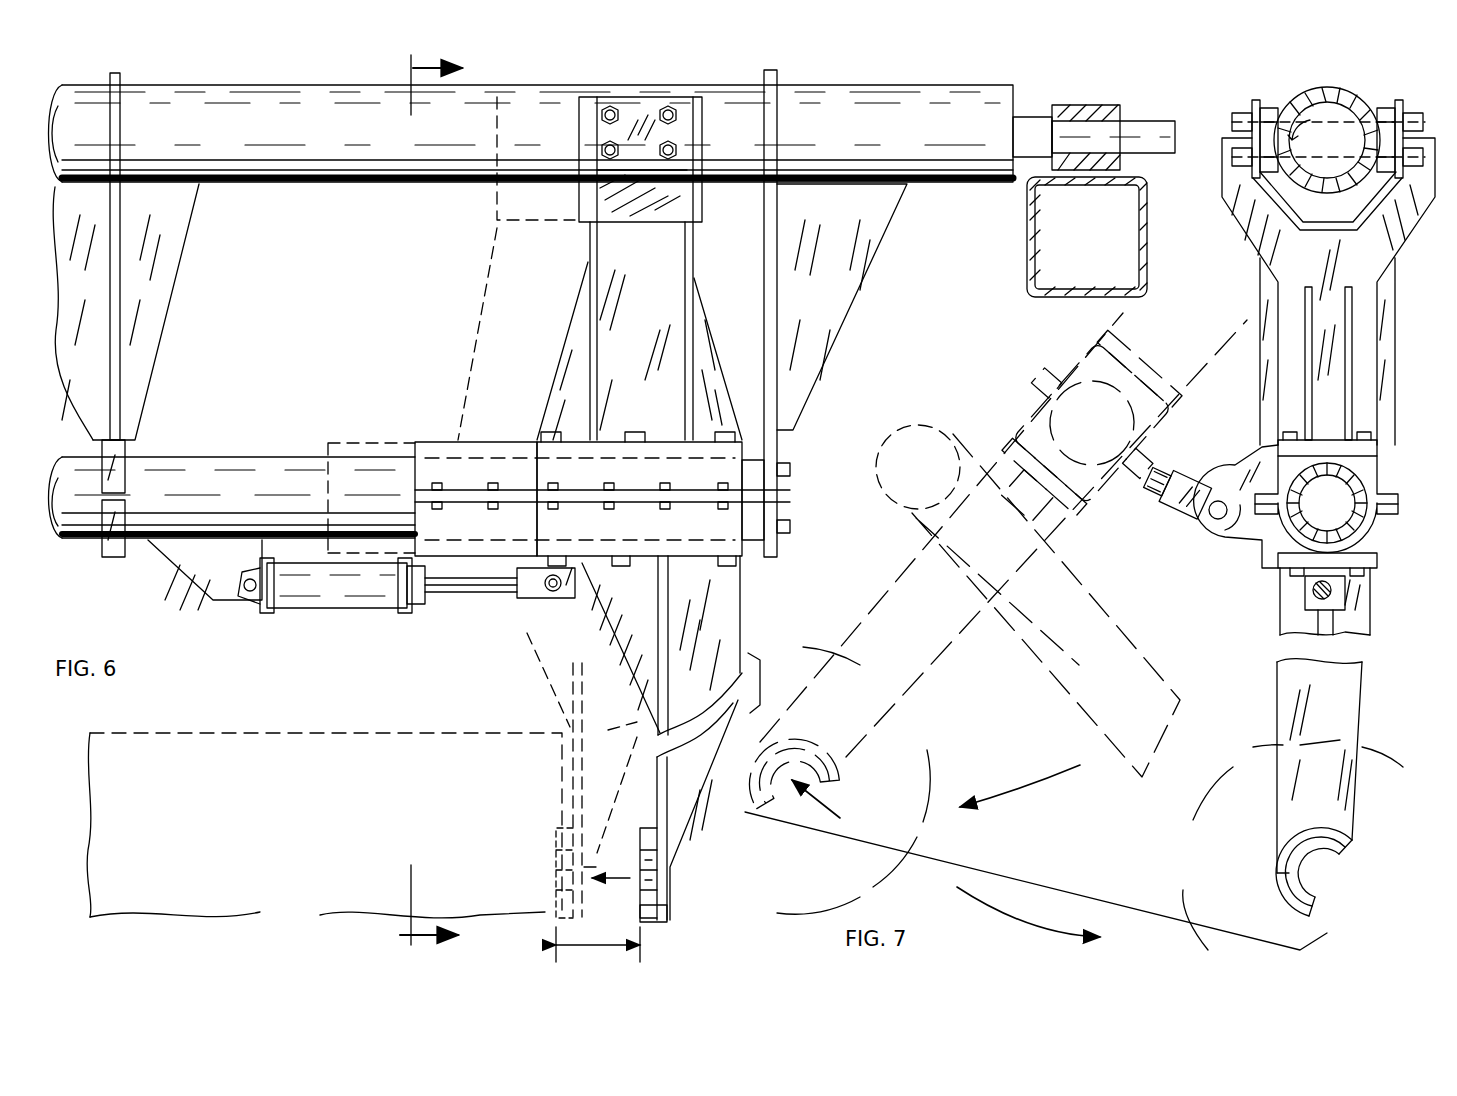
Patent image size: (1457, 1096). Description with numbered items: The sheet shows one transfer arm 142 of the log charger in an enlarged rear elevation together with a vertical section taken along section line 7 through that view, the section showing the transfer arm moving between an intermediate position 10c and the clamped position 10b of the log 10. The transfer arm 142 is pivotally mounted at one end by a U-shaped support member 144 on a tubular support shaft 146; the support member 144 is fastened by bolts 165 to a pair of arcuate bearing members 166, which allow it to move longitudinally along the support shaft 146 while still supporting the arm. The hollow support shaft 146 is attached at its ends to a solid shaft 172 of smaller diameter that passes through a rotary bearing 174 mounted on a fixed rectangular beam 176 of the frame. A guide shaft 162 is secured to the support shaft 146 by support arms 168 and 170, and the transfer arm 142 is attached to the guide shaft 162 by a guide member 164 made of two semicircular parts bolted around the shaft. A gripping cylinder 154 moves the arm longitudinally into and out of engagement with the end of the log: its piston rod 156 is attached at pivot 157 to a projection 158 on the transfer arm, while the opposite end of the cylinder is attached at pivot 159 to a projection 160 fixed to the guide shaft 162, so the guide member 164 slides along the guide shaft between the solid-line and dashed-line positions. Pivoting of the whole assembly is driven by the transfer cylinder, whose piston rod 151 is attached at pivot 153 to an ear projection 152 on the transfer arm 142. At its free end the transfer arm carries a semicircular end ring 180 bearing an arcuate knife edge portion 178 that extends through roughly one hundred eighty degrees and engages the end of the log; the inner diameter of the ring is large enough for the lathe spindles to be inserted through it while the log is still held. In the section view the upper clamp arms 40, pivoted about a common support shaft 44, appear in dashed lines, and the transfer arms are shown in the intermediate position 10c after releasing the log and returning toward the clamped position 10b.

In FIG. 6, the section line 7— 7 is at (427, 505).
In FIG. 6, the log 10 is at (430, 730).
In FIG. 7, the rough centered position 10b is at (920, 700).
In FIG. 7, the intermediate position 10c is at (1165, 872).
In FIG. 7, the upper clamp arms 40 is at (1100, 705).
In FIG. 7, the common support shaft 44 is at (878, 487).
In FIG. 6, the transfer arm 142 is at (735, 600).
In FIG. 7, the transfer arm 142 is at (1360, 725).
In FIG. 6, the U-shaped support member 144 is at (512, 72).
In FIG. 7, the U-shaped support member 144 is at (1390, 235).
In FIG. 6, the tubular support shaft 146 is at (492, 100).
In FIG. 7, the tubular support shaft 146 is at (1340, 108).
In FIG. 7, the piston rod 151 is at (1185, 472).
In FIG. 7, the ear projection 152 is at (1240, 470).
In FIG. 7, the pivot 153 is at (1210, 518).
In FIG. 6, the gripping cylinder 154 is at (322, 605).
In FIG. 6, the piston rod 156 is at (455, 592).
In FIG. 7, the piston rod 156 is at (1312, 590).
In FIG. 6, the pivot 157 is at (550, 592).
In FIG. 6, the projection 158 is at (580, 600).
In FIG. 6, the pivot 159 is at (248, 592).
In FIG. 6, the projection 160 is at (190, 570).
In FIG. 6, the guide shaft 162 is at (245, 455).
In FIG. 7, the guide shaft 162 is at (1358, 490).
In FIG. 6, the guide member 164 is at (310, 443).
In FIG. 7, the guide member 164 is at (1368, 470).
In FIG. 6, the bolts 165 is at (664, 106).
In FIG. 7, the bolts 165 is at (1232, 120).
In FIG. 7, the arcuate bearing members 166 is at (1258, 102).
In FIG. 6, the support arm 168 is at (125, 390).
In FIG. 6, the support arm 170 is at (800, 385).
In FIG. 6, the solid shaft 172 is at (1150, 120).
In FIG. 6, the rotary bearing 174 is at (1085, 105).
In FIG. 6, the fixed rectangular beam 176 is at (1148, 225).
In FIG. 6, the arcuate knife edge portion 178 is at (556, 845).
In FIG. 7, the arcuate knife edge portion 178 is at (1310, 840).
In FIG. 6, the semicircular ring 180 is at (650, 925).
In FIG. 7, the semicircular ring 180 is at (1278, 880).